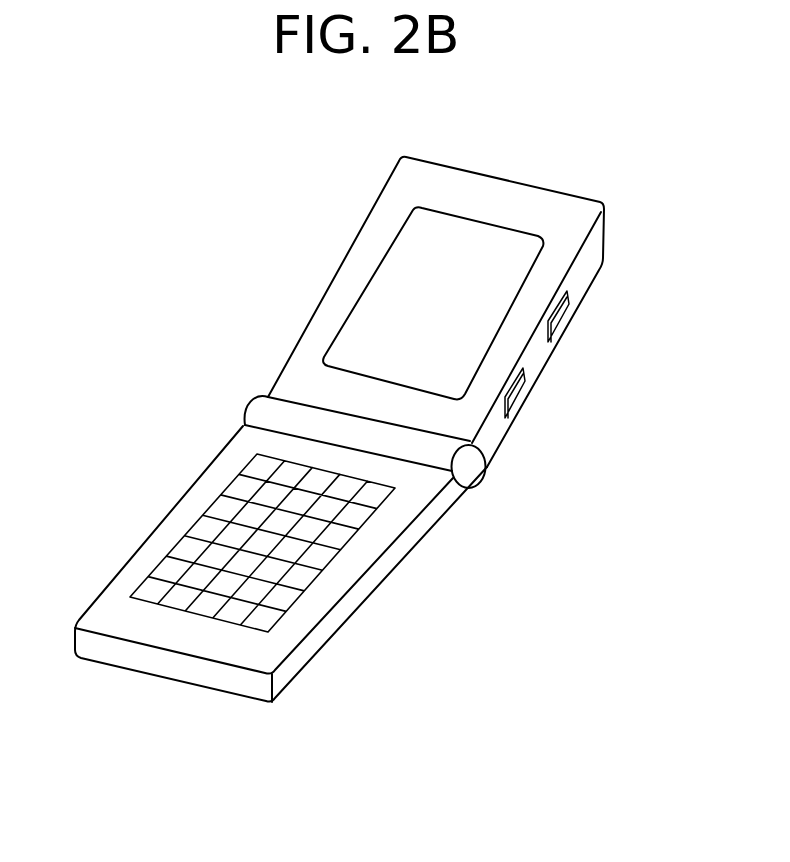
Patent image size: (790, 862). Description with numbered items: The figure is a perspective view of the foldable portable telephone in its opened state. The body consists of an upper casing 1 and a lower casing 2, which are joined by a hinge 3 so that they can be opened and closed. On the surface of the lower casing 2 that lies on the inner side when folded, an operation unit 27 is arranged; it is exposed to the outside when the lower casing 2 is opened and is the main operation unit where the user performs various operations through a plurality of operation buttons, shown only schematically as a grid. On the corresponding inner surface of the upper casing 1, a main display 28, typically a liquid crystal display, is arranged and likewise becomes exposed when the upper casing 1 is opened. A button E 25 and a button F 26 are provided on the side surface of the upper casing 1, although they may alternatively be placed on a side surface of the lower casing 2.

The upper casing 1 is at (575, 281).
The lower casing 2 is at (380, 578).
The hinge 3 is at (470, 473).
The button E 25 is at (515, 397).
The button F 26 is at (557, 316).
The operation unit 27 is at (237, 490).
The main display 28 is at (363, 333).